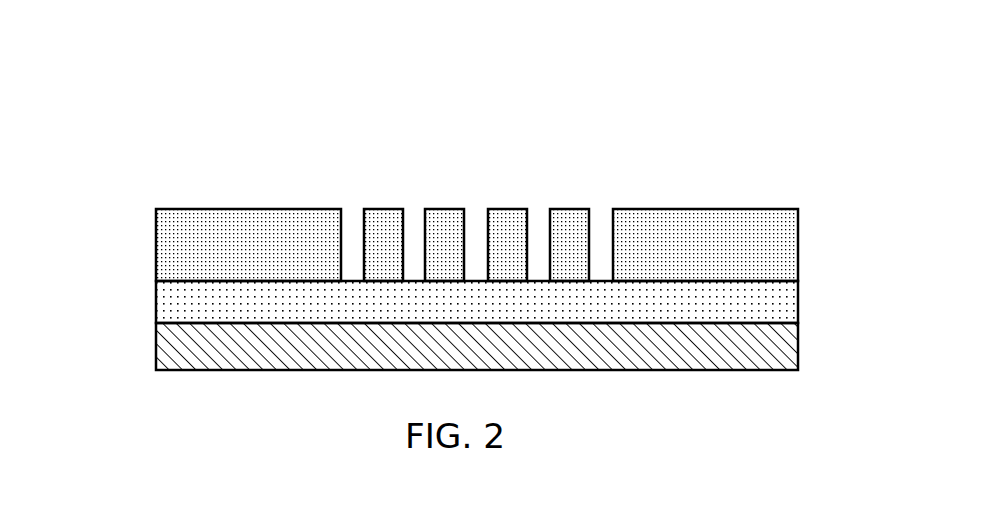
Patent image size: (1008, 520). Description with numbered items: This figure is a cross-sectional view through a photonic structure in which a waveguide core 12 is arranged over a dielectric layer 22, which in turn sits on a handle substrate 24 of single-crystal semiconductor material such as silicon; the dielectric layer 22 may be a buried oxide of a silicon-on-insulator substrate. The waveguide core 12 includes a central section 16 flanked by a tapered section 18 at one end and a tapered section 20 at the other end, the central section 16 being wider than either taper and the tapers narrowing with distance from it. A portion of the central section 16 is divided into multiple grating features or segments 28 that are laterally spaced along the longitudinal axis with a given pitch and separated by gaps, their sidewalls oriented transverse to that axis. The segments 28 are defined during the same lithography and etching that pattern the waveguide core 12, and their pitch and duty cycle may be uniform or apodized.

The waveguide core 12 is at (214, 174).
The central section 16 is at (468, 144).
The tapered section 18 is at (258, 243).
The tapered section 20 is at (687, 241).
The dielectric layer 22 is at (186, 310).
The handle substrate 24 is at (186, 357).
The segments 28 is at (445, 227).